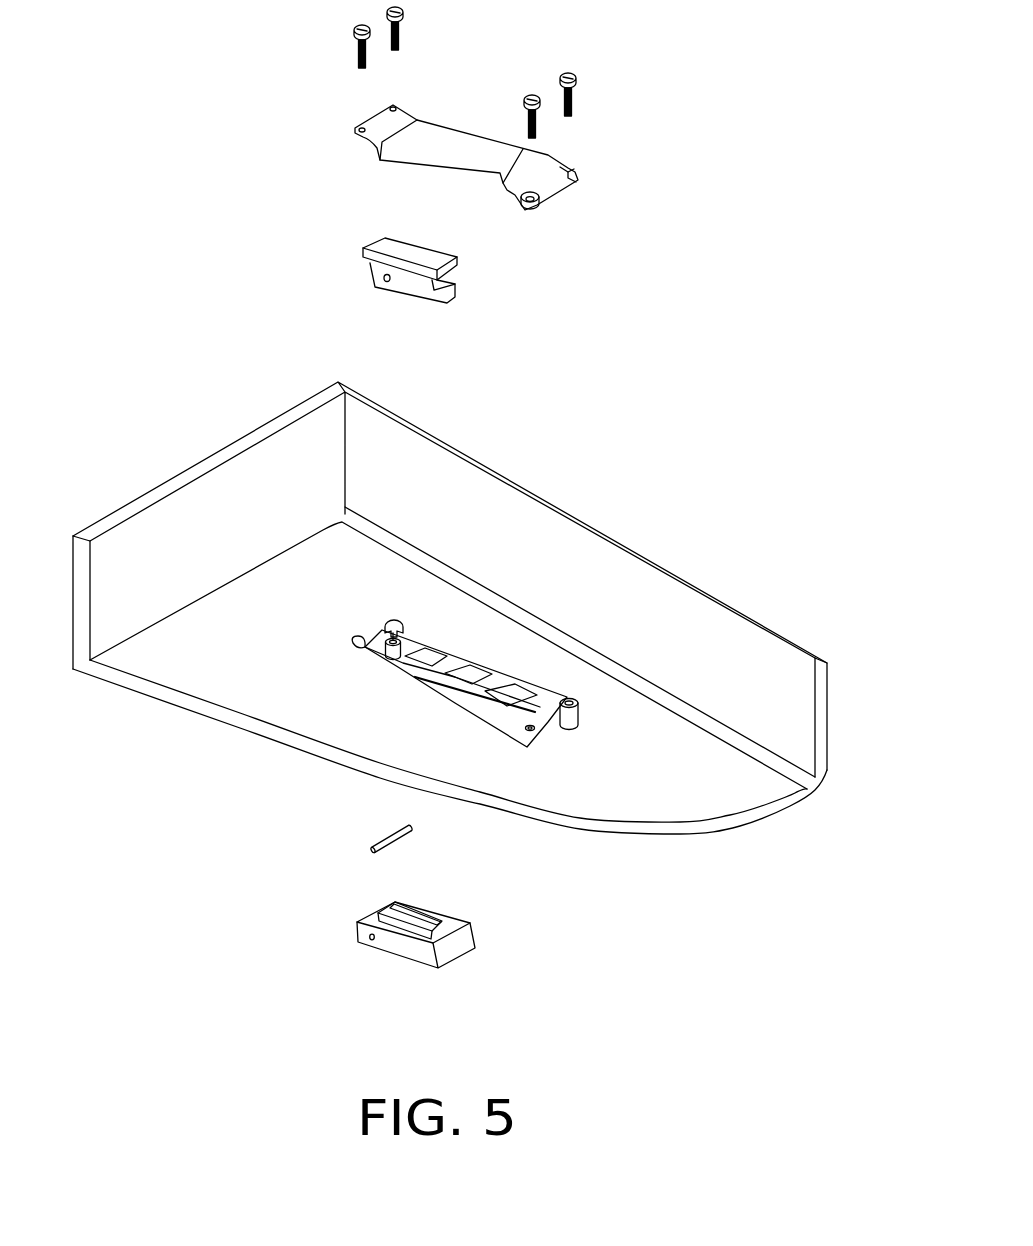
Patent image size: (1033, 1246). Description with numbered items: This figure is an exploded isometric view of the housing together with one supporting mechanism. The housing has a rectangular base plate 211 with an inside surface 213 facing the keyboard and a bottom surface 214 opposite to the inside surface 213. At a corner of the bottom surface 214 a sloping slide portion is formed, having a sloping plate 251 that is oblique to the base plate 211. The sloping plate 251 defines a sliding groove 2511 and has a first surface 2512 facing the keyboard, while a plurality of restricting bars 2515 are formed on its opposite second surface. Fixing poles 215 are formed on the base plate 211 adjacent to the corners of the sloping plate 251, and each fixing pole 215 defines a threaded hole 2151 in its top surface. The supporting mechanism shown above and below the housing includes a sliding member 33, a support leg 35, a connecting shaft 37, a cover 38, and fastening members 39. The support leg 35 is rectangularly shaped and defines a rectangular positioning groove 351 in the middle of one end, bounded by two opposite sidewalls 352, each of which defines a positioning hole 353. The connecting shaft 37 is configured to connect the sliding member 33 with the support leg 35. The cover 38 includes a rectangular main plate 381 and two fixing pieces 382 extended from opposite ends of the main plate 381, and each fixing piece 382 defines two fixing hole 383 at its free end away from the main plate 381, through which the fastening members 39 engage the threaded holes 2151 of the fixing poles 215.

The fastening members 39 is at (573, 103).
The cover 38 is at (526, 163).
The main plate 381 is at (460, 147).
The fixing pieces 382 is at (518, 180).
The fixing hole 383 is at (572, 172).
The sliding member 33 is at (378, 247).
The base plate 211 is at (102, 673).
The inside surface 213 is at (173, 668).
The bottom surface 214 is at (183, 706).
The fixing poles 215 is at (637, 557).
The threaded hole 2151 is at (569, 700).
The sloping plate 251 is at (535, 659).
The sliding groove 2511 is at (528, 690).
The first surface 2512 is at (460, 662).
The restricting bars 2515 is at (490, 677).
The connecting shaft 37 is at (393, 837).
The support leg 35 is at (394, 960).
The positioning groove 351 is at (423, 920).
The sidewalls 352 is at (375, 920).
The positioning hole 353 is at (358, 942).